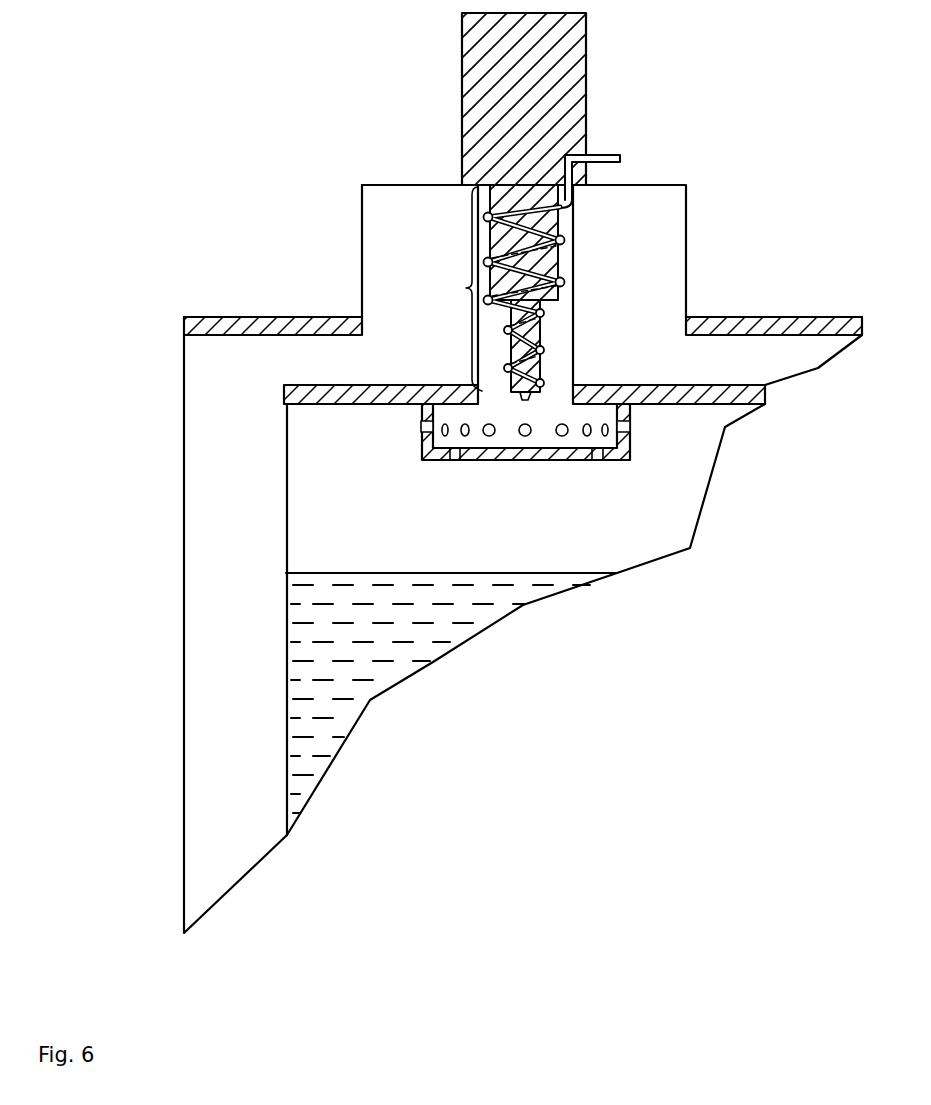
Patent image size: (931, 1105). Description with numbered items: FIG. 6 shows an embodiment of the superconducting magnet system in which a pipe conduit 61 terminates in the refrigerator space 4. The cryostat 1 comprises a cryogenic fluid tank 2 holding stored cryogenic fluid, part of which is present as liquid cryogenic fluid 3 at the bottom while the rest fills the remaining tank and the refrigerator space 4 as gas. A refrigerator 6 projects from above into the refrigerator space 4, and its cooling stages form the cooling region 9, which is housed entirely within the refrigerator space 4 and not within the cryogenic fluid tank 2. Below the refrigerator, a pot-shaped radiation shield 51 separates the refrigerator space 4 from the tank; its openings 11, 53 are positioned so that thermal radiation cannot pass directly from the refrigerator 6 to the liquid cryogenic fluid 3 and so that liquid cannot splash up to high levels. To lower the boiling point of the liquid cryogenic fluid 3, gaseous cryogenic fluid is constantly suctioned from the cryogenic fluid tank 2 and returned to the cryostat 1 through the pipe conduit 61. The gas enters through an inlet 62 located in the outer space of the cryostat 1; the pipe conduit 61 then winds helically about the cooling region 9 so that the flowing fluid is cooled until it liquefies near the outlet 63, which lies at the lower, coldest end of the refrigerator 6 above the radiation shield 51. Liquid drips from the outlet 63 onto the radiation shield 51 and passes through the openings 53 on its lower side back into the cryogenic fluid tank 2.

The cryostat 1 is at (360, 157).
The cryogenic fluid tank 2 is at (315, 508).
The liquid cryogenic fluid 3 is at (325, 640).
The refrigerator space 4 is at (565, 305).
The refrigerator 6 is at (565, 45).
The cooling region 9 is at (466, 288).
The openings 11 is at (428, 430).
The pot-shaped radiation shield 51 is at (548, 456).
The openings 53 is at (455, 456).
The pipe conduit 61 is at (565, 243).
The inlet 62 is at (620, 158).
The outlet 63 is at (540, 415).